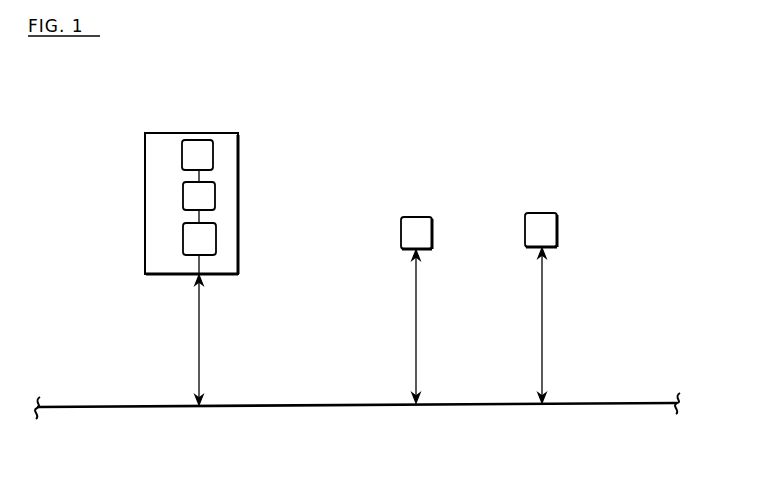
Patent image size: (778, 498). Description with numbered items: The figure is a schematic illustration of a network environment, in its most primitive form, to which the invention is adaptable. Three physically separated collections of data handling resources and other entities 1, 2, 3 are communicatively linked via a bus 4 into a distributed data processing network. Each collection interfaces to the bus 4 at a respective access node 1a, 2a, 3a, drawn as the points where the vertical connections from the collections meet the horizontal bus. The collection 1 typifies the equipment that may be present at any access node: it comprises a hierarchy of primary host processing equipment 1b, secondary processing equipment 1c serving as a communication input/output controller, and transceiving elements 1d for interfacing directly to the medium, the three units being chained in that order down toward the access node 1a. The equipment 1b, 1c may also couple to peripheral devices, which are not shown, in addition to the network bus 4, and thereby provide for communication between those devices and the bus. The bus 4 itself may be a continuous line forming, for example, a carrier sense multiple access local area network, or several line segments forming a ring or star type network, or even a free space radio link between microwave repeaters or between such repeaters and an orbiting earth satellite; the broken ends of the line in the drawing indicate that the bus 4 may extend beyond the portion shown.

The collection of data handling resources 1 is at (163, 176).
The access node 1a is at (192, 400).
The primary (host) processing equipment 1b is at (181, 146).
The secondary processing equipment 1c is at (184, 192).
The transceiving elements 1d is at (191, 238).
The collection of data handling resources 2 is at (407, 217).
The access node 2a is at (403, 393).
The collection of data handling resources 3 is at (530, 222).
The access node 3a is at (532, 393).
The bus 4 is at (608, 398).